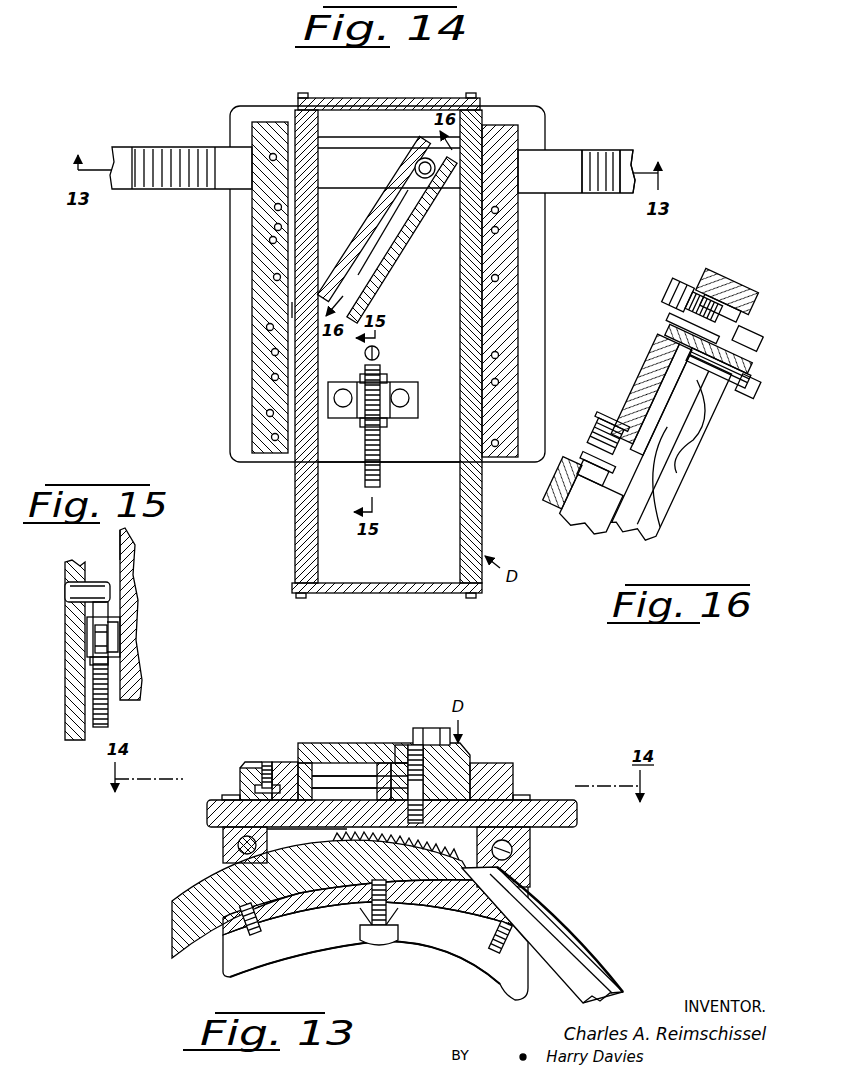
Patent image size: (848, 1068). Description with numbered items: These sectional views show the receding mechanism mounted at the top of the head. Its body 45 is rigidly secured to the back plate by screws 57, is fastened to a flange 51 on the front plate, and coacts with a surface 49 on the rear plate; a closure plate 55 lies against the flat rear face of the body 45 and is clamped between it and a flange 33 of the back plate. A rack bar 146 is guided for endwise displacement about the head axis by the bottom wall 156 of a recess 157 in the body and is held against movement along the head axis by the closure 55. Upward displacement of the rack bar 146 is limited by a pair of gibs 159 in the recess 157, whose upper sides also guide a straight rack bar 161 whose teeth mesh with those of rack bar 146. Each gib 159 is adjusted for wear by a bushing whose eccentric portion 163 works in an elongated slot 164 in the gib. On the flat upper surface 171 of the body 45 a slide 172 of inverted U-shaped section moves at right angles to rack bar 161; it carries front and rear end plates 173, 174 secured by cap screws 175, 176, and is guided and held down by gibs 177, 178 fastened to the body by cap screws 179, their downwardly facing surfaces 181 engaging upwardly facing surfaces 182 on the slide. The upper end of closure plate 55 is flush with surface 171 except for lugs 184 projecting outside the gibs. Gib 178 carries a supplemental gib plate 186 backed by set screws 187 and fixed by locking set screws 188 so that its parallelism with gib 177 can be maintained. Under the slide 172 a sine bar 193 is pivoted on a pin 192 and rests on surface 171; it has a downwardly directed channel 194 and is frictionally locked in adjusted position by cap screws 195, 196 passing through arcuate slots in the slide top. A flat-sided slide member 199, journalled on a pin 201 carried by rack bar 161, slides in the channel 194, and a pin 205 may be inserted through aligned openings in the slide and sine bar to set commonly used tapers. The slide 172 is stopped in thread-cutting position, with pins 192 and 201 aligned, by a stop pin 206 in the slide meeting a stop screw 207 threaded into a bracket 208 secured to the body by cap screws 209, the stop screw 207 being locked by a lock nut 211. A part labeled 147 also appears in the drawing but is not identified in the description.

In FIG. 13, the flange 33 is at (297, 937).
In FIG. 15, the body 45 is at (122, 552).
In FIG. 13, the body 45 is at (285, 905).
In FIG. 13, the surface 49 is at (258, 932).
In FIG. 13, the flange 51 is at (435, 948).
In FIG. 16, the closure plate 55 is at (748, 345).
In FIG. 13, the screws 57 is at (378, 940).
In FIG. 14, the rack bar 146 is at (600, 150).
In FIG. 13, the rack bar 146 is at (595, 938).
In FIG. 14, the shaft end 147 is at (636, 160).
In FIG. 13, the bottom wall 156 is at (312, 900).
In FIG. 13, the recess 157 is at (238, 842).
In FIG. 13, the gibs 159 is at (228, 858).
In FIG. 14, the straight rack bar 161 is at (240, 150).
In FIG. 16, the straight rack bar 161 is at (750, 373).
In FIG. 13, the straight rack bar 161 is at (577, 815).
In FIG. 13, the eccentric portion 163 is at (512, 855).
In FIG. 13, the elongated slot 164 is at (527, 887).
In FIG. 14, the flat upper surface 171 is at (425, 351).
In FIG. 16, the flat upper surface 171 is at (604, 524).
In FIG. 15, the flat upper surface 171 is at (140, 610).
In FIG. 13, the flat upper surface 171 is at (343, 777).
In FIG. 14, the slide 172 is at (482, 522).
In FIG. 16, the slide 172 is at (666, 345).
In FIG. 15, the slide 172 is at (68, 575).
In FIG. 13, the slide 172 is at (320, 745).
In FIG. 14, the front end plate 173 is at (410, 594).
In FIG. 14, the rear end plate 174 is at (397, 100).
In FIG. 16, the rear end plate 174 is at (713, 270).
In FIG. 14, the cap screws 175 is at (472, 598).
In FIG. 14, the cap screws 176 is at (482, 84).
In FIG. 14, the gib 177 is at (512, 336).
In FIG. 13, the gib 177 is at (513, 772).
In FIG. 14, the gib 178 is at (262, 388).
In FIG. 13, the gib 178 is at (262, 763).
In FIG. 14, the cap screws 179 is at (272, 212).
In FIG. 13, the downwardly facing surfaces 181 is at (282, 764).
In FIG. 13, the upwardly facing surfaces 182 is at (302, 762).
In FIG. 13, the lugs 184 is at (222, 796).
In FIG. 14, the supplemental gib plate 186 is at (290, 310).
In FIG. 13, the supplemental gib plate 186 is at (242, 775).
In FIG. 13, the set screws 187 is at (255, 788).
In FIG. 14, the locking set screws 188 is at (273, 242).
In FIG. 13, the locking set screws 188 is at (264, 764).
In FIG. 16, the pin 192 is at (670, 334).
In FIG. 13, the pin 192 is at (402, 745).
In FIG. 14, the sine bar 193 is at (415, 235).
In FIG. 16, the sine bar 193 is at (656, 390).
In FIG. 13, the sine bar 193 is at (383, 765).
In FIG. 14, the channel 194 is at (366, 250).
In FIG. 16, the channel 194 is at (688, 461).
In FIG. 13, the channel 194 is at (348, 781).
In FIG. 16, the cap screw 195 is at (615, 426).
In FIG. 16, the cap screw 196 is at (670, 284).
In FIG. 13, the cap screw 196 is at (430, 728).
In FIG. 14, the slide member 199 is at (408, 198).
In FIG. 16, the slide member 199 is at (712, 422).
In FIG. 13, the slide member 199 is at (398, 763).
In FIG. 14, the pin 201 is at (418, 160).
In FIG. 16, the pin 201 is at (740, 400).
In FIG. 13, the pin 201 is at (346, 800).
In FIG. 16, the pin 205 is at (582, 468).
In FIG. 14, the stop pin 206 is at (379, 356).
In FIG. 15, the stop pin 206 is at (68, 592).
In FIG. 14, the stop screw 207 is at (365, 450).
In FIG. 15, the stop screw 207 is at (108, 705).
In FIG. 14, the bracket 208 is at (400, 418).
In FIG. 15, the bracket 208 is at (118, 635).
In FIG. 14, the cap screws 209 is at (345, 390).
In FIG. 15, the cap screws 209 is at (95, 640).
In FIG. 14, the lock nut 211 is at (362, 422).
In FIG. 15, the lock nut 211 is at (92, 662).